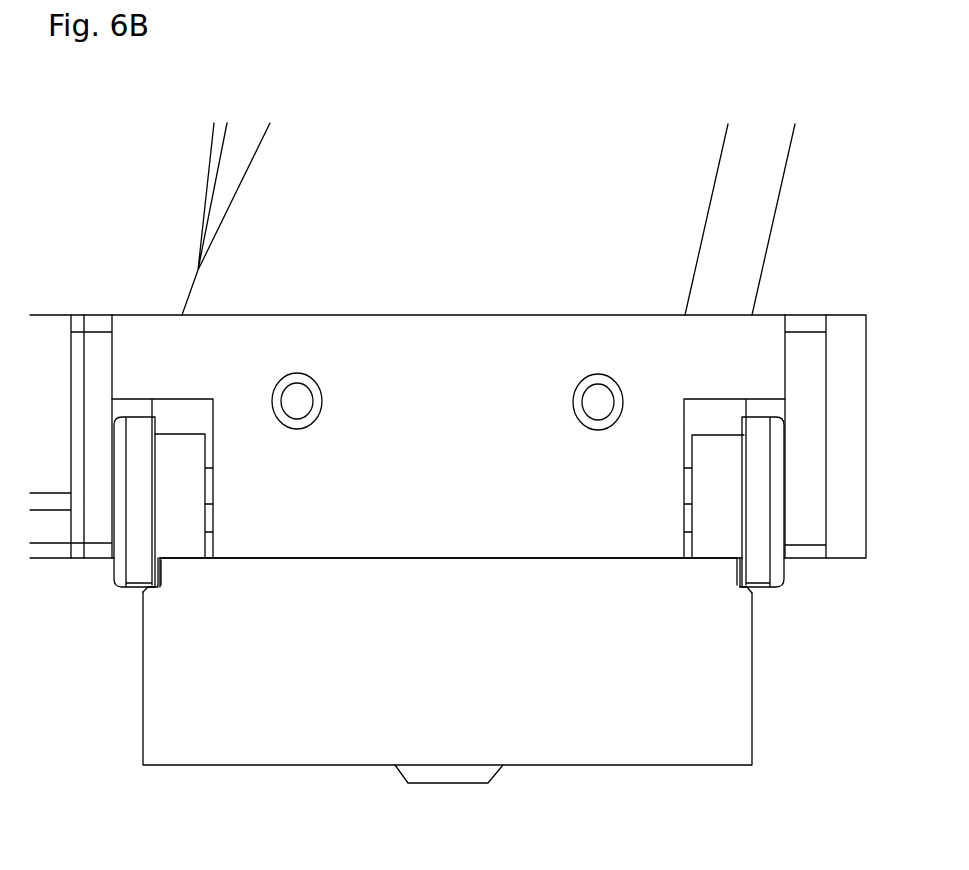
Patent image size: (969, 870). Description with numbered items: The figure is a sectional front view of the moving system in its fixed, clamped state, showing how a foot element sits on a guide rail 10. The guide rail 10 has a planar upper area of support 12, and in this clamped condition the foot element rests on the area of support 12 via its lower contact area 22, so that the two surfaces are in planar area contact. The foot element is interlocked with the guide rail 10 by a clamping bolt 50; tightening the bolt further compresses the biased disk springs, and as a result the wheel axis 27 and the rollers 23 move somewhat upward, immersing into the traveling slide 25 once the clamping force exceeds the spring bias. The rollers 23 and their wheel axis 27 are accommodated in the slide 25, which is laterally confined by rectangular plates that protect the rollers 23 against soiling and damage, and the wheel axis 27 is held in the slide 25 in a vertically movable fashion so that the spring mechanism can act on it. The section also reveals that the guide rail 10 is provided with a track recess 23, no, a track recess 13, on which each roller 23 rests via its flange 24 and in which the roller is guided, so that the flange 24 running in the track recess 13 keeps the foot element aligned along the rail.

The guide rail 10 is at (733, 750).
The area of support 12 is at (503, 563).
The track recess 13 is at (152, 590).
The contact area 22 is at (447, 558).
The roller 23 is at (181, 552).
The flange 24 is at (136, 587).
The slide 25 is at (135, 331).
The wheel axis 27 is at (207, 505).
The clamping bolt 50 is at (493, 785).